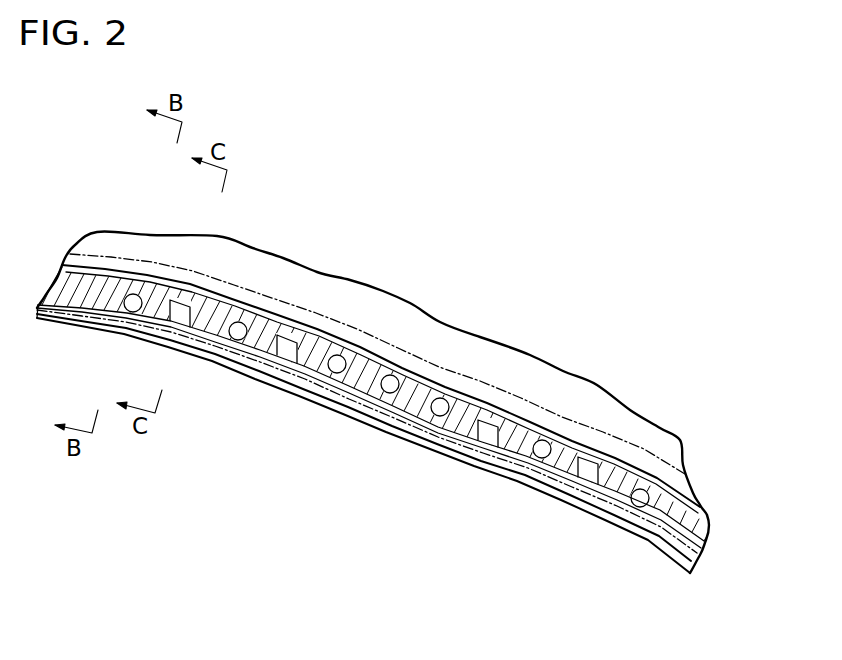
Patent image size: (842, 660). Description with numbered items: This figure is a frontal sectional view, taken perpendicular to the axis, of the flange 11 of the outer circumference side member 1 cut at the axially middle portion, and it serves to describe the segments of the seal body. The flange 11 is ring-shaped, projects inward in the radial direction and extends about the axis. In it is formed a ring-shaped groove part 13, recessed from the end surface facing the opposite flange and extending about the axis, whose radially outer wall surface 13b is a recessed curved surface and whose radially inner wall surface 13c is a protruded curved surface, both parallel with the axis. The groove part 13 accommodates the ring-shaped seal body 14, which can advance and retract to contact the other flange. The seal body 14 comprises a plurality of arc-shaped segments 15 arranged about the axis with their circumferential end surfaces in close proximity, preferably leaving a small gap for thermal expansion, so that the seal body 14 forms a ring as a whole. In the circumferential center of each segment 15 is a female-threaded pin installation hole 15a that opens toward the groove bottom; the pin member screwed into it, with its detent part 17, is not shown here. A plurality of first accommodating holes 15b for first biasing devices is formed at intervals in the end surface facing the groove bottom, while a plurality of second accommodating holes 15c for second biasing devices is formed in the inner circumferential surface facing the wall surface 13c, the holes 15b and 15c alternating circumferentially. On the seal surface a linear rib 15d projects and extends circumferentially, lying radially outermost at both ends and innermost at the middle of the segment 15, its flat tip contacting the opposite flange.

The outer circumference side member 1 is at (338, 278).
The flange 11 is at (558, 388).
The groove part 13 is at (162, 304).
The wall surface 13b is at (270, 299).
The wall surface 13c is at (338, 378).
The seal body 14 is at (372, 353).
The segment 15 is at (62, 265).
The pin installation hole 15a is at (396, 417).
The first accommodating hole 15b is at (127, 310).
The second accommodating hole 15c is at (172, 321).
The rib 15d is at (620, 483).
The detent part 17 is at (407, 378).